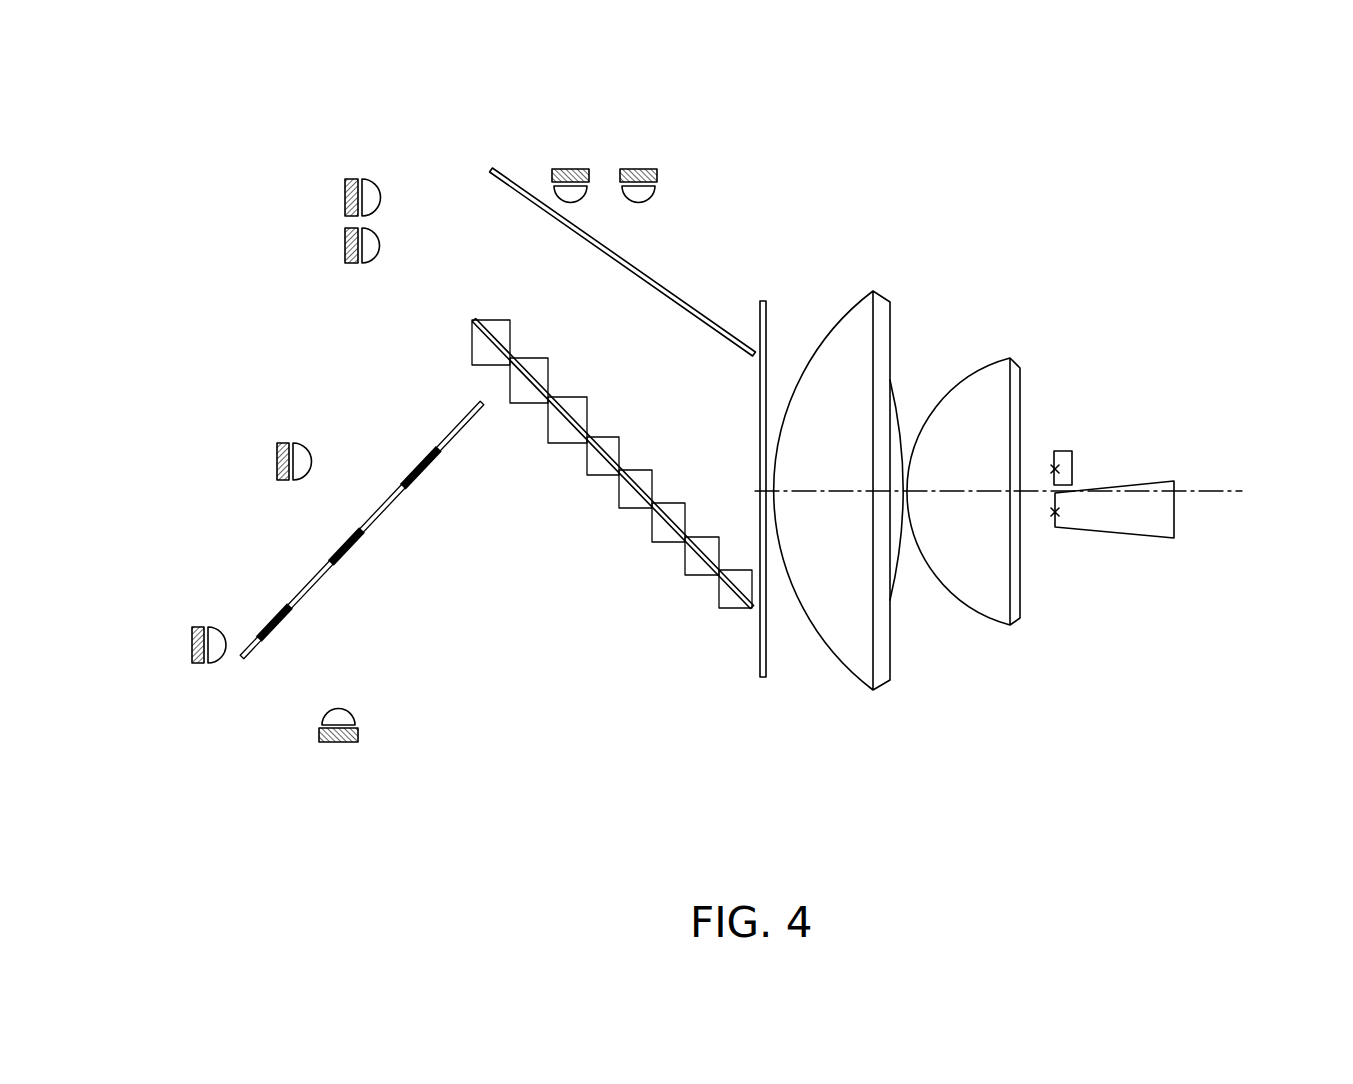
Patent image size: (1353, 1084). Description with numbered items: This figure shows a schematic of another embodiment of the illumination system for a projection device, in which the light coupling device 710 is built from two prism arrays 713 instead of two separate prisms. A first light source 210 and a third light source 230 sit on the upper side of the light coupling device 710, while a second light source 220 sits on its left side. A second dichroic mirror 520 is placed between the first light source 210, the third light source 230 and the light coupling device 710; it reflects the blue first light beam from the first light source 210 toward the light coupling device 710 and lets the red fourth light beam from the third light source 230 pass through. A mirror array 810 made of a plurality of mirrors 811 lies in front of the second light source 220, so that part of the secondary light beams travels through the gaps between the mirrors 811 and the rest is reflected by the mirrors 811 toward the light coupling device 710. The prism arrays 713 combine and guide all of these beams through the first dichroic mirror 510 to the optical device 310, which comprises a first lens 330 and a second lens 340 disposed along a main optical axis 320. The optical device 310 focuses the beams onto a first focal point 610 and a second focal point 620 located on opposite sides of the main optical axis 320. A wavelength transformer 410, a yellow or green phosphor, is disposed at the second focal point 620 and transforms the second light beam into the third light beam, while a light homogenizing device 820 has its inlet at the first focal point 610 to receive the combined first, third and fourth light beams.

The first light source 210 is at (344, 252).
The second light source 220 is at (276, 461).
The third light source 230 is at (635, 168).
The optical device 310 is at (897, 538).
The main optical axis 320 is at (1224, 490).
The first lens 330 is at (848, 653).
The second lens 340 is at (963, 542).
The wavelength transformer 410 is at (1070, 478).
The first dichroic mirror 510 is at (766, 330).
The second dichroic mirror 520 is at (718, 333).
The first focal point 610 is at (1062, 529).
The second focal point 620 is at (1064, 456).
The light coupling device 710 is at (618, 561).
The prism arrays 713 is at (593, 468).
The mirror array 810 is at (438, 455).
The mirrors 811 is at (333, 553).
The light homogenizing device 820 is at (1135, 528).